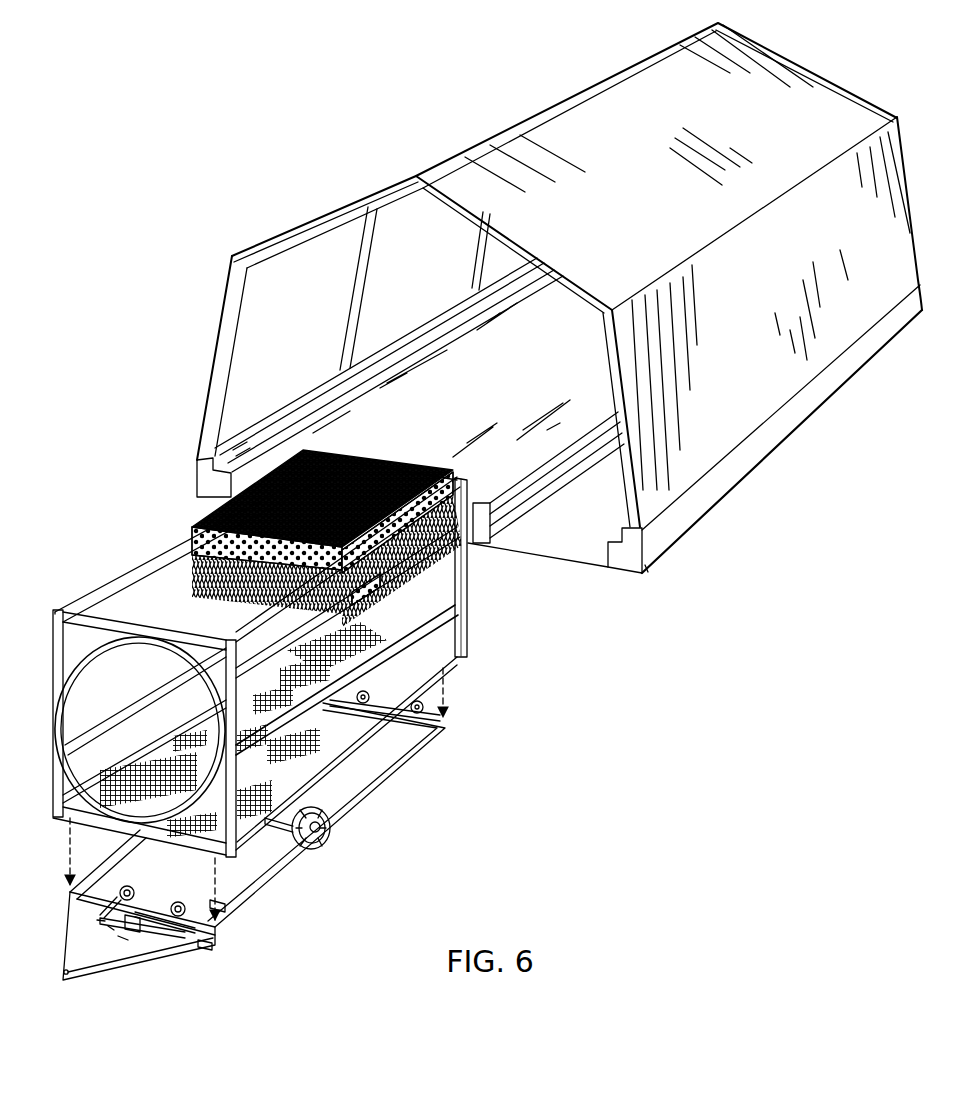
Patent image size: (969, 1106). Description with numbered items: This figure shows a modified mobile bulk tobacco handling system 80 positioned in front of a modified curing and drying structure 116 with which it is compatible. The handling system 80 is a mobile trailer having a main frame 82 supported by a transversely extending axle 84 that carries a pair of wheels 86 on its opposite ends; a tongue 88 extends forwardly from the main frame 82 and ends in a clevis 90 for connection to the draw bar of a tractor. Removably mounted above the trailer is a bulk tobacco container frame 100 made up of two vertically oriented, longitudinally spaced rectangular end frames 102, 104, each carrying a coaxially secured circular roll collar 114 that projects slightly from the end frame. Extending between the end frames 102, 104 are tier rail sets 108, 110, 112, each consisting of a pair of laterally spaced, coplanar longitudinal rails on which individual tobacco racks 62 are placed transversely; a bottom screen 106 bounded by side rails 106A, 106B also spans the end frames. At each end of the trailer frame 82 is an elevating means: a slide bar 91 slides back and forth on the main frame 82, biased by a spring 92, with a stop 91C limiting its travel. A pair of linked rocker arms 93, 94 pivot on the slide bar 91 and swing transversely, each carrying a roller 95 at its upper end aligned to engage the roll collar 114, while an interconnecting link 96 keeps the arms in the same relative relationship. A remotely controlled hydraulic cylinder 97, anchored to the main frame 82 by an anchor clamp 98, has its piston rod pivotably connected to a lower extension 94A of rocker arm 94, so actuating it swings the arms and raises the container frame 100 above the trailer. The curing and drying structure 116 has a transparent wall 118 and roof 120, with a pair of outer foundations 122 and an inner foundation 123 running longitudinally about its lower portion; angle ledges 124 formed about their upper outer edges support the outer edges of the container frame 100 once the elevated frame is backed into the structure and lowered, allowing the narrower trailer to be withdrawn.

The rack 62 is at (192, 535).
The mobile bulk tobacco handling system 80 is at (611, 606).
The main frame 82 is at (393, 777).
The axle 84 is at (274, 830).
The wheels 86 is at (327, 812).
The tongue 88 is at (152, 956).
The clevis 90 is at (70, 978).
The slide bar 91 is at (150, 942).
The stop 91C is at (225, 903).
The spring 92 is at (97, 922).
The rocker arm 93 is at (102, 893).
The rocker arm 94 is at (178, 920).
The lower extension 94A is at (208, 952).
The roller 95 is at (134, 888).
The interconnecting link 96 is at (145, 916).
The hydraulic cylinder 97 is at (125, 940).
The anchor clamp 98 is at (110, 928).
The bulk tobacco container frame 100 is at (271, 653).
The rectangular end frame 102 is at (53, 790).
The rectangular end frame 104 is at (467, 604).
The bottom screen 106 is at (55, 824).
The side rail 106A is at (445, 668).
The side rail 106B is at (134, 738).
The tier rail set 108 is at (233, 630).
The tier rail set 110 is at (110, 662).
The tier rail set 112 is at (160, 695).
The roll collar 114 is at (440, 637).
The curing and drying structure 116 is at (532, 303).
The transparent wall structure 118 is at (244, 300).
The transparent roof structure 120 is at (793, 70).
The outer foundation 122 is at (197, 487).
The inner foundation 123 is at (483, 420).
The angle ledge 124 is at (514, 295).